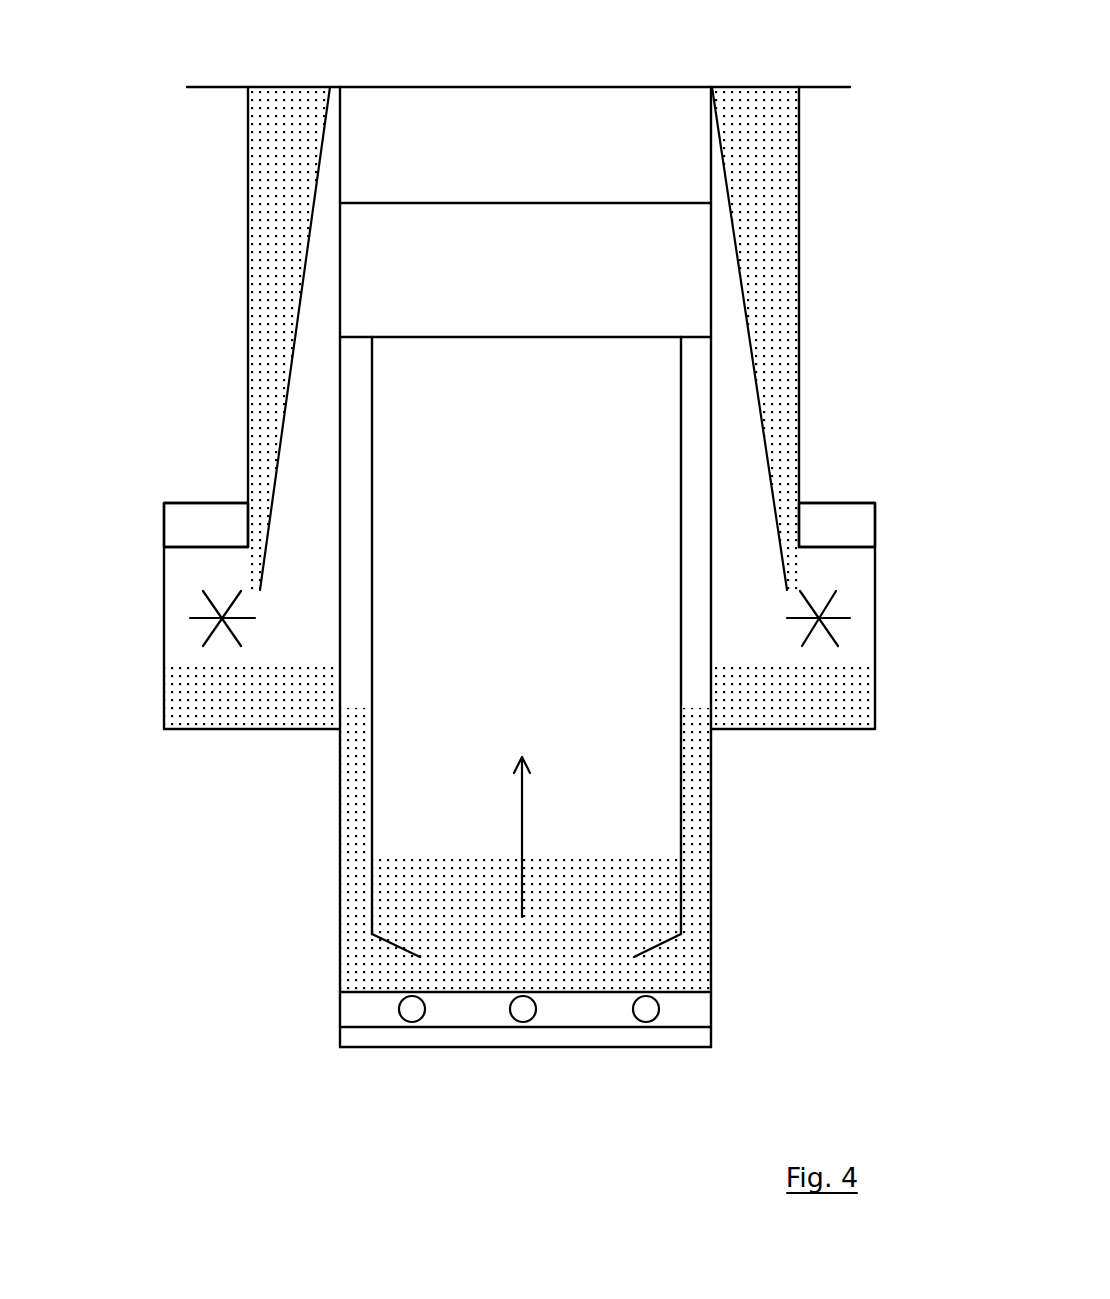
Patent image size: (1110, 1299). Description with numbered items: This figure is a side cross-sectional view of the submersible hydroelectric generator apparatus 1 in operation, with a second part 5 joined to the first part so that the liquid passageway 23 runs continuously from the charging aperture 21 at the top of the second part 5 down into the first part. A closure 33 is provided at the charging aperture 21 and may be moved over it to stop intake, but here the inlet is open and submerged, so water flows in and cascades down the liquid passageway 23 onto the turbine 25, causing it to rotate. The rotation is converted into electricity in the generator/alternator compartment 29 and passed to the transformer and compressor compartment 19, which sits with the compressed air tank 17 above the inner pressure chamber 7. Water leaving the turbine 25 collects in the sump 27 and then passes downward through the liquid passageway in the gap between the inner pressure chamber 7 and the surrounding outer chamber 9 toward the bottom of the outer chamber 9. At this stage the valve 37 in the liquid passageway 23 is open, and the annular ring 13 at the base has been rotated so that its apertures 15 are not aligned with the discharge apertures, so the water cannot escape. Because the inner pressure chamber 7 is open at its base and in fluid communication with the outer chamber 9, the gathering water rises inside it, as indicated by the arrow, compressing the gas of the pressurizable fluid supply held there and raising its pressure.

The submersible hydroelectric generator apparatus 1 is at (155, 127).
The second part 5 is at (800, 317).
The inner pressure chamber 7 is at (452, 406).
The outer chamber 9 is at (712, 862).
The annular ring 13 is at (455, 1015).
The apertures 15 is at (410, 1012).
The compressed air tank 17 is at (640, 235).
The transformer and compressor compartment 19 is at (518, 133).
The charging aperture 21 is at (278, 87).
The liquid passageway 23 is at (280, 172).
The turbine 25 is at (218, 620).
The sump 27 is at (188, 693).
The generator/alternator compartment 29 is at (183, 527).
The closure 33 is at (215, 87).
The valve 37 is at (408, 948).